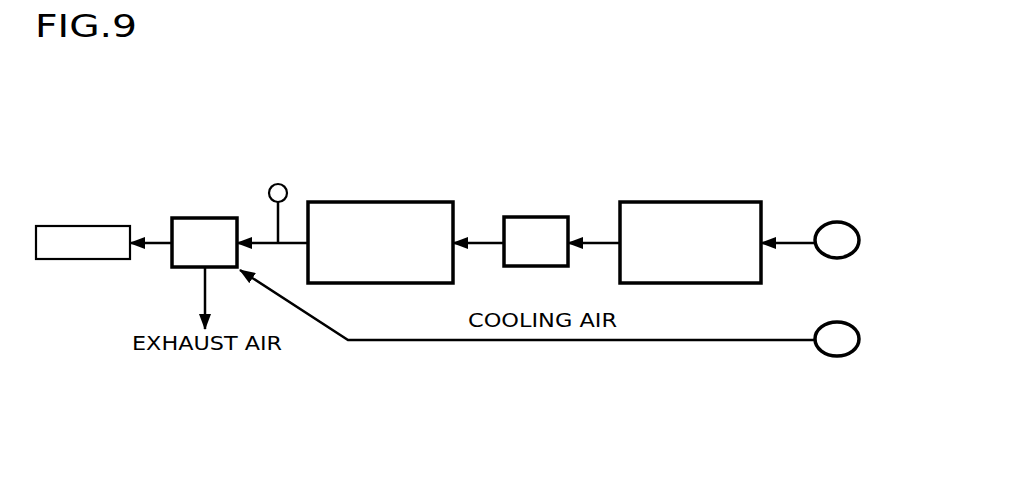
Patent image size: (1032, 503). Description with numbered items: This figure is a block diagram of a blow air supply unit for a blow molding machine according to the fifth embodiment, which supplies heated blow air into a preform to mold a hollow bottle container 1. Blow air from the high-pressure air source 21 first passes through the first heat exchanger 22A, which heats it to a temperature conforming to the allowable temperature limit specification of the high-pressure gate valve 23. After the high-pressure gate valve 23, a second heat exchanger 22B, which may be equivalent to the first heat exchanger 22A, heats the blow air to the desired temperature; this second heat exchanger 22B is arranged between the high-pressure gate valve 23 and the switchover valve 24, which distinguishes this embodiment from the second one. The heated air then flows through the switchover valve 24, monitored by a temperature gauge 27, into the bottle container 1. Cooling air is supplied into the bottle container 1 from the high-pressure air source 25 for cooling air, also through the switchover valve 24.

The hollow bottle container 1 is at (83, 259).
The high-pressure air source 21 is at (838, 222).
The first heat exchanger 22A is at (703, 202).
The second heat exchanger 22B is at (372, 202).
The high-pressure gate valve 23 is at (536, 217).
The switchover valve 24 is at (200, 218).
The high-pressure air source for cooling air 25 is at (838, 356).
The temperature gauge 27 is at (278, 184).